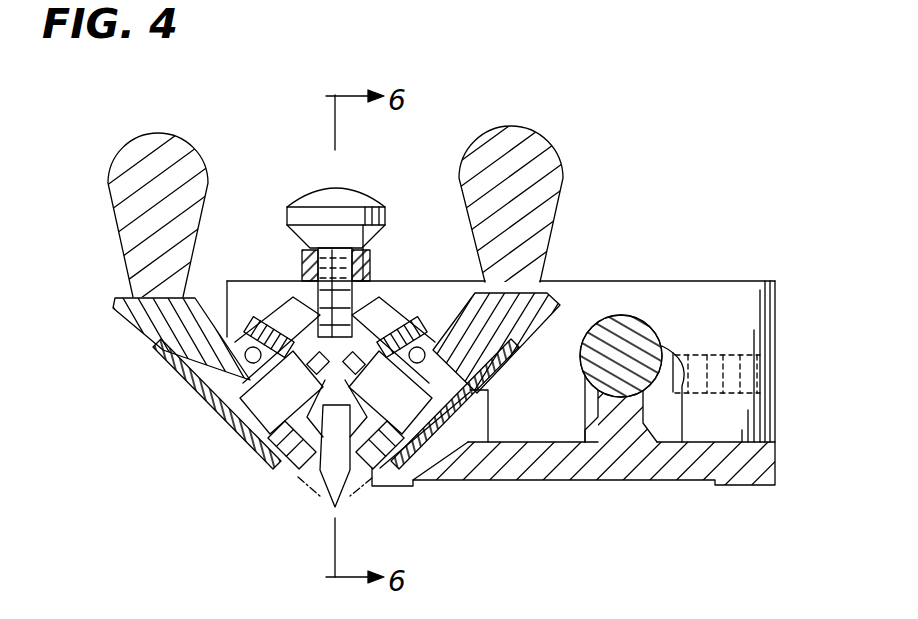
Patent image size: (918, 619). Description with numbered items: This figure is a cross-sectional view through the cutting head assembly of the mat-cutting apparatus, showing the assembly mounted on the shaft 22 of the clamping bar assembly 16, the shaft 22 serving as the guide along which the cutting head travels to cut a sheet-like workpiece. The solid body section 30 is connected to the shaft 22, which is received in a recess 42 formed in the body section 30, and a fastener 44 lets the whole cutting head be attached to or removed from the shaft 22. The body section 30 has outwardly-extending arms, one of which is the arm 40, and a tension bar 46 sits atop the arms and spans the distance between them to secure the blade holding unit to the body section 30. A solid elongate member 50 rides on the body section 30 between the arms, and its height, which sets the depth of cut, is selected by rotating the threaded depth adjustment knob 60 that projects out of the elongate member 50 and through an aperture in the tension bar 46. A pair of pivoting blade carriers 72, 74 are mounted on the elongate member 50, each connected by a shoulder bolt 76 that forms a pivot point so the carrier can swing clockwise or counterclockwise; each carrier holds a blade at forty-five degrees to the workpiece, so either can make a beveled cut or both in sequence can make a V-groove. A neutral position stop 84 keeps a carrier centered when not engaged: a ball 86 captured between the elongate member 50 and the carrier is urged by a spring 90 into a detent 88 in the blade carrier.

The clamping bar assembly 16 is at (604, 455).
The shaft 22 is at (620, 316).
The solid body section 30 is at (770, 280).
The arm 40 is at (400, 279).
The recess 42 is at (668, 428).
The fastener 44 is at (742, 378).
The tension bar 46 is at (362, 247).
The solid elongate member 50 is at (281, 295).
The threaded depth adjustment knob 60 is at (312, 198).
The pivoting blade carrier 72 is at (108, 173).
The pivoting blade carrier 74 is at (548, 202).
The shoulder bolt 76 is at (447, 512).
The neutral position stop 84 is at (282, 306).
The ball 86 is at (220, 366).
The detent 88 is at (418, 340).
The spring 90 is at (257, 342).